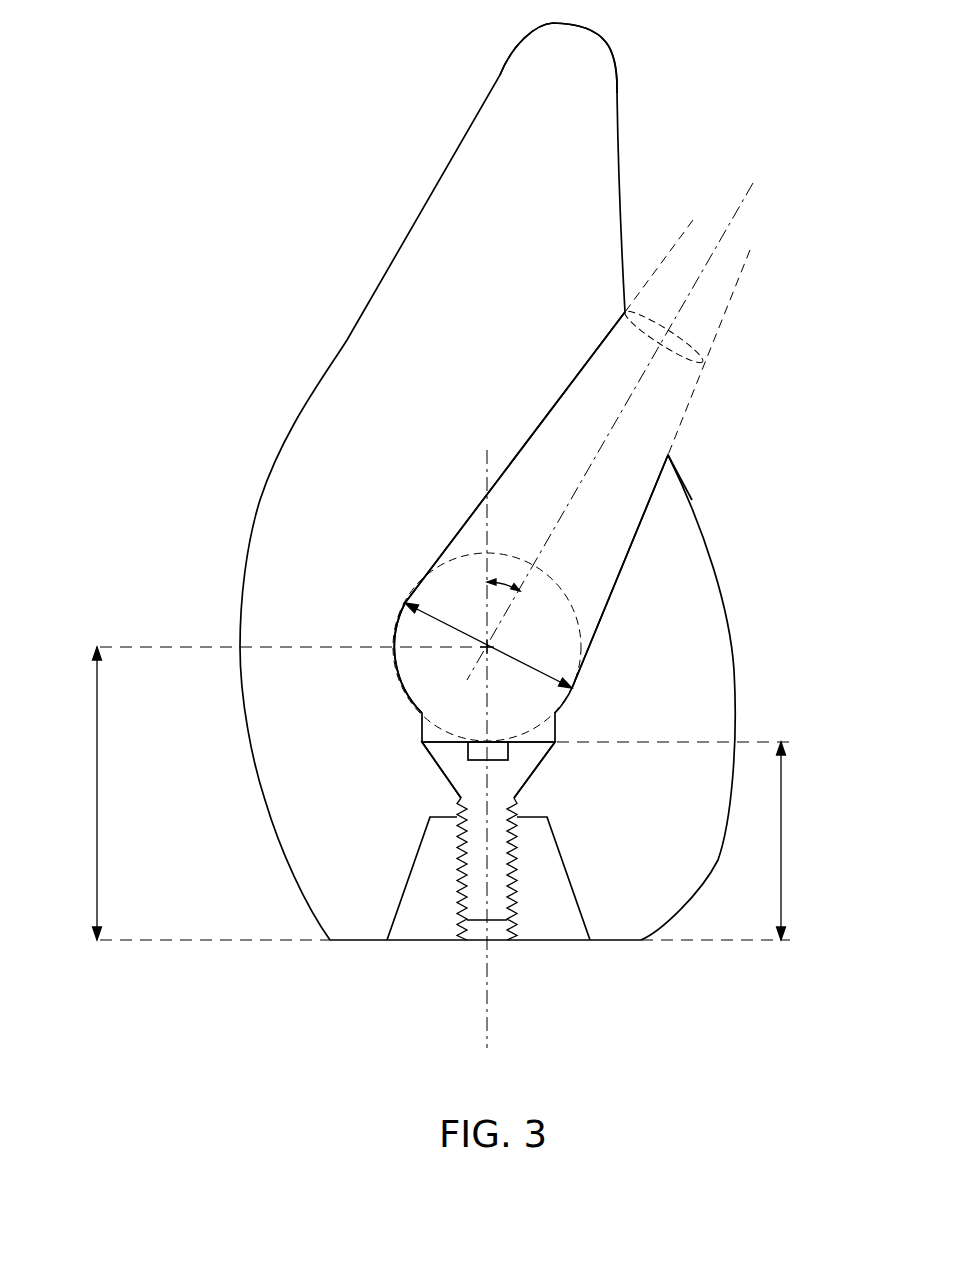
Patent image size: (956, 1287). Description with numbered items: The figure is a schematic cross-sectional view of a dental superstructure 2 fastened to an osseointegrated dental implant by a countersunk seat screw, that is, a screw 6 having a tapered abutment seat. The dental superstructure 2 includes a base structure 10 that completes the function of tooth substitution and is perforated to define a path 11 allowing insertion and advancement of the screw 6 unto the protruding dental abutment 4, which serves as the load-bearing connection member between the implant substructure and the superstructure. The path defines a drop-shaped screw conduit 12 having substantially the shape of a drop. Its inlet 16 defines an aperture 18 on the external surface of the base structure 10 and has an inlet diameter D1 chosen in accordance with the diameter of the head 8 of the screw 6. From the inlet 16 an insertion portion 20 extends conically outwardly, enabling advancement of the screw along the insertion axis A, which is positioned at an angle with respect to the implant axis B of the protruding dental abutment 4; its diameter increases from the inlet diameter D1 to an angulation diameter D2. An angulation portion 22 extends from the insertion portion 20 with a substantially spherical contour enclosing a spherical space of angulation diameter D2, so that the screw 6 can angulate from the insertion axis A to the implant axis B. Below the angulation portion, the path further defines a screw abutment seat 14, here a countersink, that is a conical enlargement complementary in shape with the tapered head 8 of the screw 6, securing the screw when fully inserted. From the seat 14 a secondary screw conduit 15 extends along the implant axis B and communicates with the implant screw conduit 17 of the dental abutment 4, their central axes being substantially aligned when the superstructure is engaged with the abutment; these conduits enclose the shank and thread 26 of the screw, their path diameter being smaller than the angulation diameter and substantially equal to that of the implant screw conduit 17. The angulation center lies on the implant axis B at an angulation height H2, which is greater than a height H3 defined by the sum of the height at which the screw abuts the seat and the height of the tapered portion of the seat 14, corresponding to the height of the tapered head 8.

The dental superstructure 2 is at (346, 219).
The base structure 10 is at (505, 124).
The insertion portion 20 is at (555, 405).
The angulation portion 22 is at (395, 630).
The aperture 18 is at (633, 428).
The inlet 16 is at (669, 453).
The drop-shaped screw conduit 12 is at (633, 558).
The path 11 is at (571, 575).
The screw abutment seat 14 is at (442, 772).
The screw head 8 is at (517, 765).
The secondary screw conduit 15 is at (518, 802).
The implant screw conduit 17 is at (462, 898).
The screw 6 is at (474, 945).
The shank and thread 26 is at (497, 867).
The protruding dental abutment 4 is at (553, 928).
The insertion axis A is at (745, 195).
The implant axis B is at (487, 1031).
The inlet diameter D1 is at (690, 343).
The angulation diameter D2 is at (528, 671).
The angulation height H2 is at (272, 793).
The height H3 is at (690, 841).